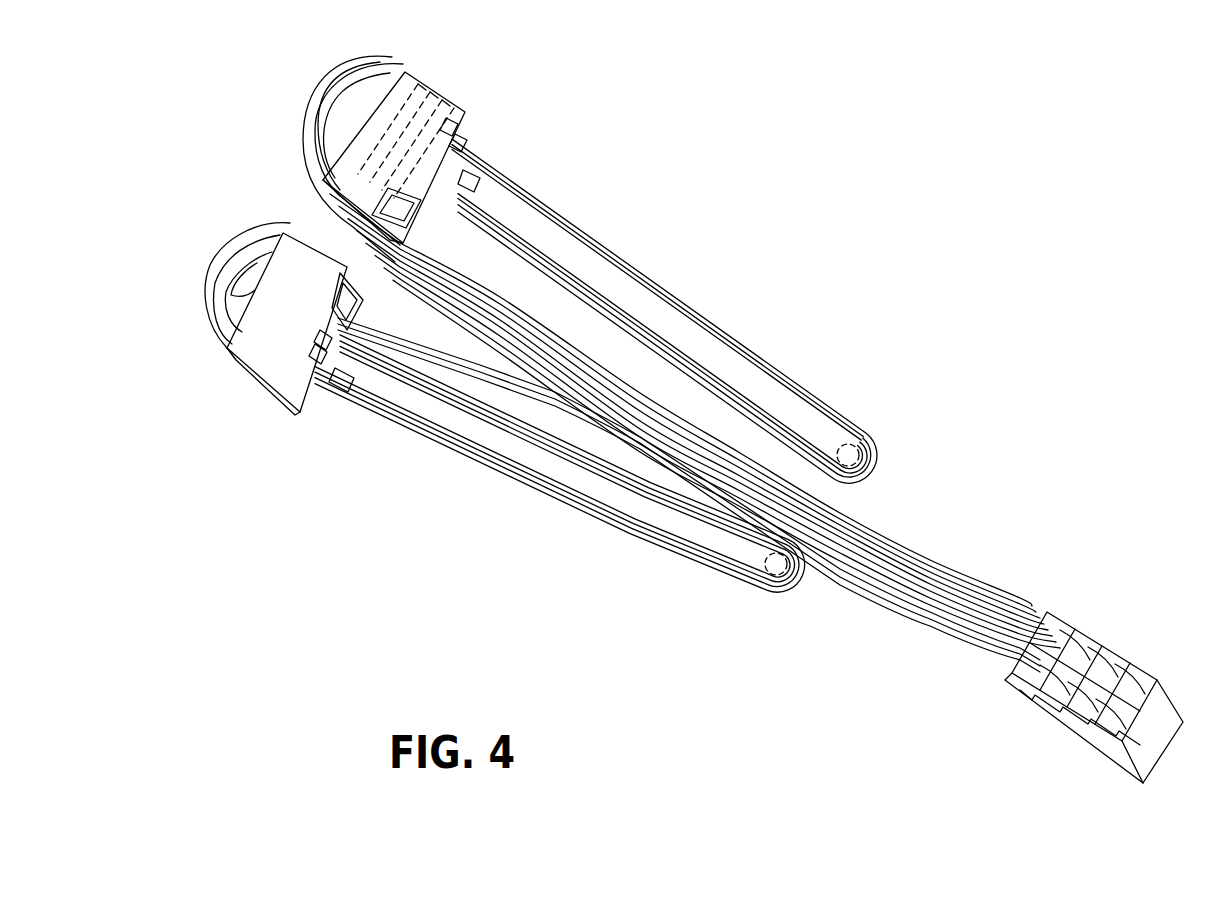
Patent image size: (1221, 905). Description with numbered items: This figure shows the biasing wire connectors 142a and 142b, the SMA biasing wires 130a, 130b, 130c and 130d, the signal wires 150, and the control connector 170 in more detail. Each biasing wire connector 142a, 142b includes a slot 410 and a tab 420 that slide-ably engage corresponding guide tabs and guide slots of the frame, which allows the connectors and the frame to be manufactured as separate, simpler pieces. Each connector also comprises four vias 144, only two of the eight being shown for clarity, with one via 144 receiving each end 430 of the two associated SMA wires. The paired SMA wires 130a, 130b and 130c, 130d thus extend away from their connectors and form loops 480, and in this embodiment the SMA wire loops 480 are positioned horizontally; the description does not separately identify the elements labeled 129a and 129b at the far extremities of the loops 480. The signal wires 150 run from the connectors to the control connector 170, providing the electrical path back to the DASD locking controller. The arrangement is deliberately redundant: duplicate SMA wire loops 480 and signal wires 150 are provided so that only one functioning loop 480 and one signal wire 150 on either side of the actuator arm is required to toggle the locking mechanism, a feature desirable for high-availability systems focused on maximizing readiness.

The bend of first hairpin tube 129a is at (849, 455).
The bend of second hairpin tube 129b is at (773, 558).
The SMA biasing wire 130a is at (848, 428).
The SMA biasing wire 130b is at (866, 479).
The SMA biasing wire 130c is at (773, 586).
The SMA biasing wire 130d is at (795, 577).
The biasing wire connector 142a is at (458, 92).
The biasing wire connector 142b is at (230, 358).
The via 144 is at (405, 102).
The signal wire 150 is at (898, 572).
The control connector 170 is at (1160, 702).
The slot 410 is at (403, 220).
The tab 420 is at (467, 177).
The end 430 is at (447, 122).
The SMA wire loop 480 is at (743, 348).